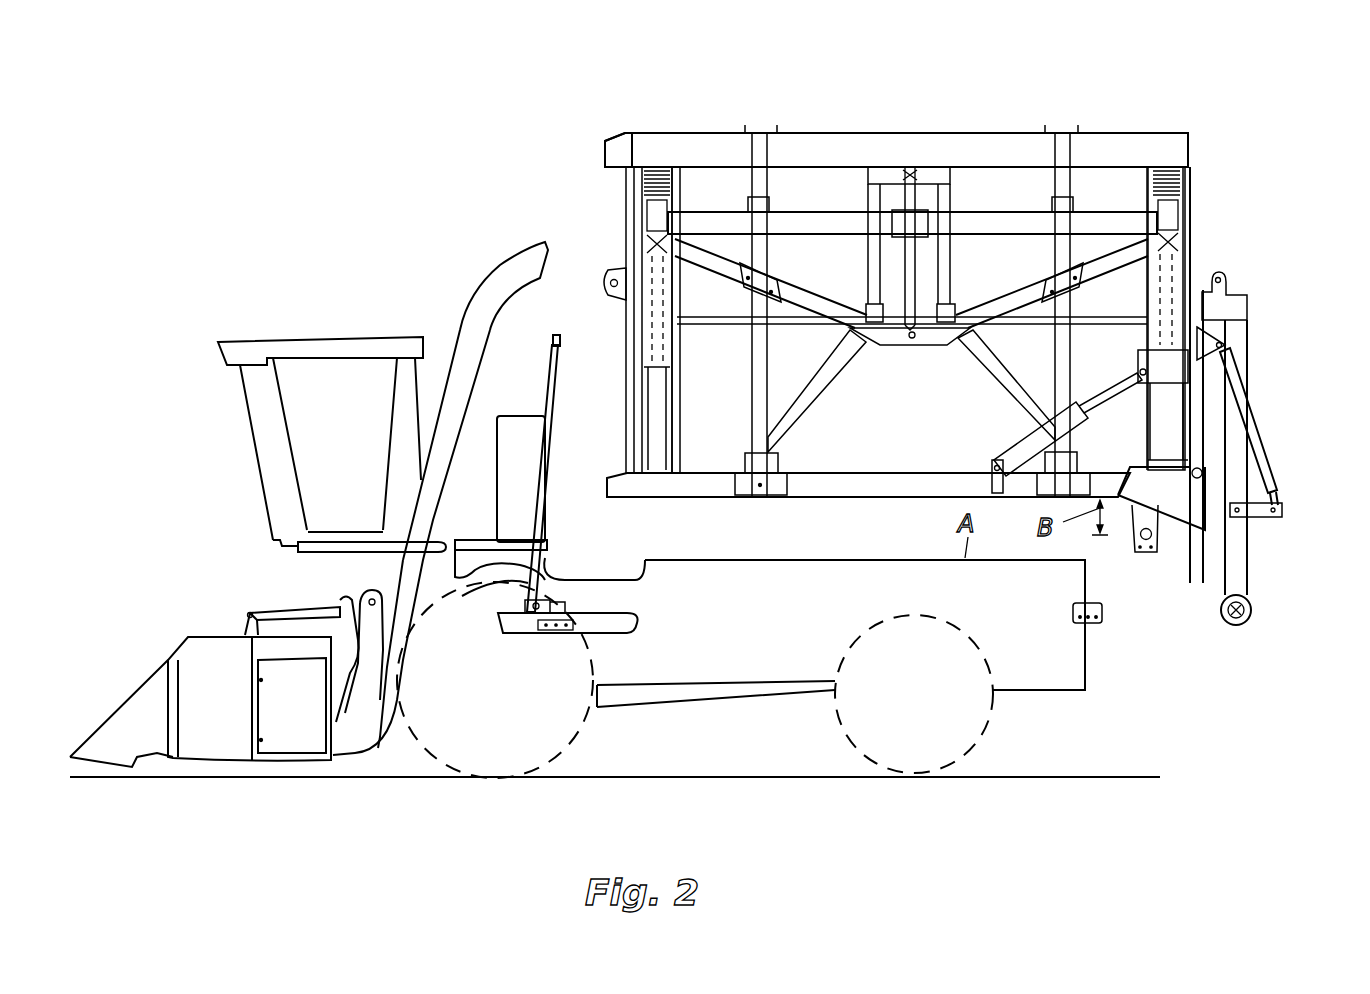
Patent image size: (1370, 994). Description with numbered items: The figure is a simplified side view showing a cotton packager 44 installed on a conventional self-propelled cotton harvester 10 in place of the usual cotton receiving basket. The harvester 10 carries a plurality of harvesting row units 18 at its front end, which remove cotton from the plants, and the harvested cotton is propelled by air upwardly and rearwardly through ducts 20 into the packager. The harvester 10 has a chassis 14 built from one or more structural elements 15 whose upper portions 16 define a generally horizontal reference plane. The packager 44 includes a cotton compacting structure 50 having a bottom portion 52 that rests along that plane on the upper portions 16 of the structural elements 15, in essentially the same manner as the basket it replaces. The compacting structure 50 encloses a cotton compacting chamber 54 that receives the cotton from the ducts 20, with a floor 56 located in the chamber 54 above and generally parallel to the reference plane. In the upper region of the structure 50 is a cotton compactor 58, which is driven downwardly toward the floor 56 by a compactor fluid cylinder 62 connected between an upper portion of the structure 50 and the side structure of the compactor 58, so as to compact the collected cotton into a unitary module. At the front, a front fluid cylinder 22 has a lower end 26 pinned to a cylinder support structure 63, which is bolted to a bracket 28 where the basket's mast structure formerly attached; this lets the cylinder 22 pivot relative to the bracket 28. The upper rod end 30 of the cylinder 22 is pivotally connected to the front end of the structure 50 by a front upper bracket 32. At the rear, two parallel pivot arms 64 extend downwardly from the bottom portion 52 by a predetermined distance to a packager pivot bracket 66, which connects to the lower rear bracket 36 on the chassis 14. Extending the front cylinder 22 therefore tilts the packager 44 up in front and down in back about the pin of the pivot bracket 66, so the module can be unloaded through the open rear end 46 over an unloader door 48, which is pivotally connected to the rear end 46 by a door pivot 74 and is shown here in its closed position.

The cotton harvester 10 is at (450, 150).
The chassis 14 is at (1062, 690).
The structural elements 15 is at (830, 560).
The upper portions 16 is at (830, 560).
The harvesting row units 18 is at (168, 645).
The ducts 20 is at (485, 283).
The front fluid cylinder 22 is at (548, 383).
The lower end 26 is at (492, 581).
The bracket 28 is at (575, 637).
The upper rod end 30 is at (565, 343).
The front upper bracket 32 is at (572, 330).
The lower rear bracket 36 is at (1137, 557).
The cotton packager 44 is at (1192, 131).
The open rear end 46 is at (1200, 262).
The unloader door 48 is at (1252, 607).
The cotton compacting structure 50 is at (985, 133).
The bottom portion 52 is at (810, 497).
The cotton compacting chamber 54 is at (712, 427).
The floor 56 is at (863, 470).
The cotton compactor 58 is at (1116, 205).
The compactor fluid cylinder 62 is at (920, 270).
The cylinder support structure 63 is at (539, 612).
The pivot arms 64 is at (1167, 532).
The packager pivot bracket 66 is at (1157, 543).
The door pivot 74 is at (1203, 477).